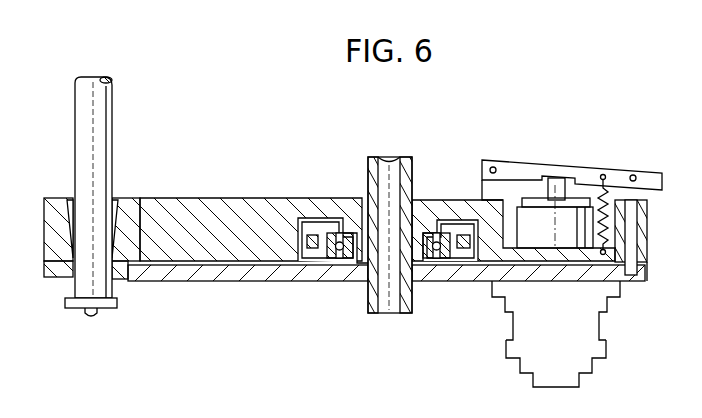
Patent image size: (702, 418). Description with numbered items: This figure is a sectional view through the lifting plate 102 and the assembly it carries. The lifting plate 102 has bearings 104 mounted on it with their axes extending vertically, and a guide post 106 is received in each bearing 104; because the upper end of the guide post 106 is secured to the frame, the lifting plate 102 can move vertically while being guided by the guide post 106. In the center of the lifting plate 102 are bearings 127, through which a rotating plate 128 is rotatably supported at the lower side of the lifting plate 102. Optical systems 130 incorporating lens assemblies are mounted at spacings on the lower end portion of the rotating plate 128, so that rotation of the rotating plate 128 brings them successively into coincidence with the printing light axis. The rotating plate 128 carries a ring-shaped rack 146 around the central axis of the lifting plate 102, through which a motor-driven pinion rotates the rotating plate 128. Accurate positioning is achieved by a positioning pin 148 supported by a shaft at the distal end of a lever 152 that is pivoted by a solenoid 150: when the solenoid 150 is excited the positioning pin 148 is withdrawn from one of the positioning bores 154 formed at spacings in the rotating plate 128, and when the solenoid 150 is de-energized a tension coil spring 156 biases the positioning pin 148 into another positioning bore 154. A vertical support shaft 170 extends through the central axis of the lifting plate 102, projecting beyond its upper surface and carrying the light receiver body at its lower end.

The lifting plate 102 is at (225, 205).
The bearings 104 is at (115, 197).
The guide posts 106 is at (114, 116).
The bearings 127 is at (443, 262).
The rotating plate 128 is at (587, 286).
The optical systems 130 is at (601, 348).
The rack 146 is at (311, 217).
The positioning pin 148 is at (647, 233).
The solenoid 150 is at (574, 208).
The lever 152 is at (528, 160).
The positioning bores 154 is at (645, 272).
The tension coil spring 156 is at (604, 188).
The support shaft 170 is at (412, 170).